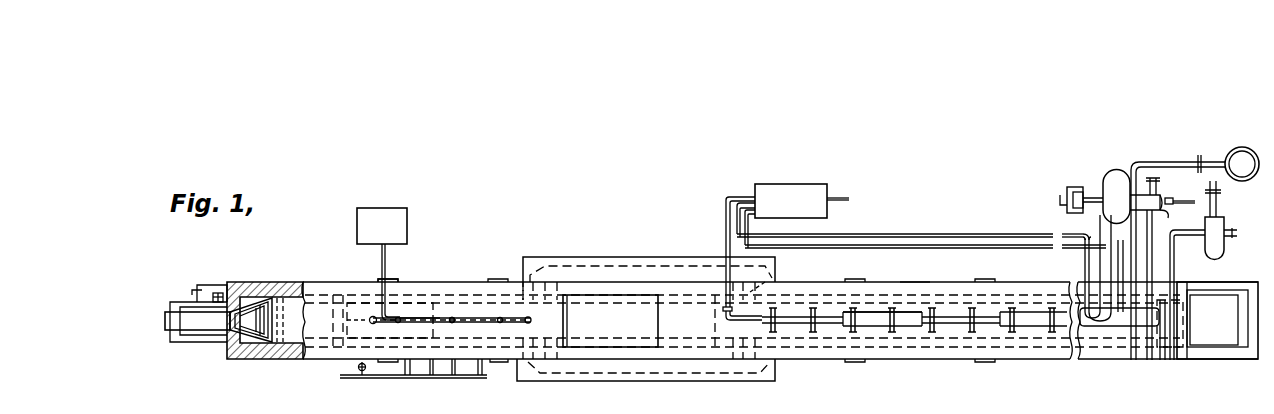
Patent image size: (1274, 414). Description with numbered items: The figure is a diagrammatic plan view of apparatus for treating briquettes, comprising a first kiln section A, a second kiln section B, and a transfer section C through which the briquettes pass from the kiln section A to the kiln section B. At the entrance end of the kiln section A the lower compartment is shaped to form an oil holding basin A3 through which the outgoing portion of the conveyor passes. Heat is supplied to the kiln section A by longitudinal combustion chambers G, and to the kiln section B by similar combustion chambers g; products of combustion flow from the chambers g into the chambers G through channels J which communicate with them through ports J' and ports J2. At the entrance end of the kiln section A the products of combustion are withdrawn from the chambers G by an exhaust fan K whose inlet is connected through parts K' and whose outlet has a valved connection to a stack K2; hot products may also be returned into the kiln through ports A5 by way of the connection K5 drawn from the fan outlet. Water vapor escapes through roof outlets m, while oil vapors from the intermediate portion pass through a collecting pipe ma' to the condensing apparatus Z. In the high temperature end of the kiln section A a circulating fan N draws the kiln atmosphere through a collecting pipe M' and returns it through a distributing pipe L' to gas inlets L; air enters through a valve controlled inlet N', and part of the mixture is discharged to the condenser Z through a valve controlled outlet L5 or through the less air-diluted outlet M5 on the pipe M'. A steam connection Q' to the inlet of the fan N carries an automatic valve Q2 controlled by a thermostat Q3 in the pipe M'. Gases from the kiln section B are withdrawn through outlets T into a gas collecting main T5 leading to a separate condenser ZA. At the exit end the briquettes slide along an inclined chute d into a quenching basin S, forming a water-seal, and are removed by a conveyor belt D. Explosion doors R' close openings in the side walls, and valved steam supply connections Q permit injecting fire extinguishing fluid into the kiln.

The conveyor belt D is at (165, 321).
The basin S is at (222, 340).
The inclined chute d is at (266, 306).
The kiln section B is at (343, 282).
The combustion chambers G is at (346, 330).
The condenser ZA is at (384, 204).
The explosion doors R' is at (685, 317).
The outlets T is at (500, 318).
The gas collecting main T5 is at (418, 318).
The combustion chambers g is at (456, 316).
The channels J is at (646, 313).
The ports J' is at (515, 267).
The ports J2 is at (765, 282).
The transfer section C is at (590, 300).
The steam supply connections Q is at (413, 385).
The valve controlled outlet L5 is at (724, 231).
The condensing apparatus Z is at (809, 184).
The collecting pipe ma' is at (938, 300).
The gas inlets L is at (914, 298).
The distributing pipe L' is at (967, 265).
The kiln section A is at (914, 281).
The circulating fan N is at (1069, 188).
The valve controlled inlet N' is at (1154, 169).
The steam connection Q' is at (1176, 177).
The automatic valve Q2 is at (1172, 199).
The thermostat Q3 is at (1168, 216).
The pipe K5 is at (1140, 168).
The ports A5 is at (1140, 276).
The stack K2 is at (1242, 170).
The exhaust fan K is at (1228, 220).
The parts K' is at (1201, 308).
The valve controlled outlet M5 is at (1130, 266).
The collecting pipe M' is at (1113, 347).
The outlets m is at (1160, 362).
The oil holding basin A3 is at (1222, 347).